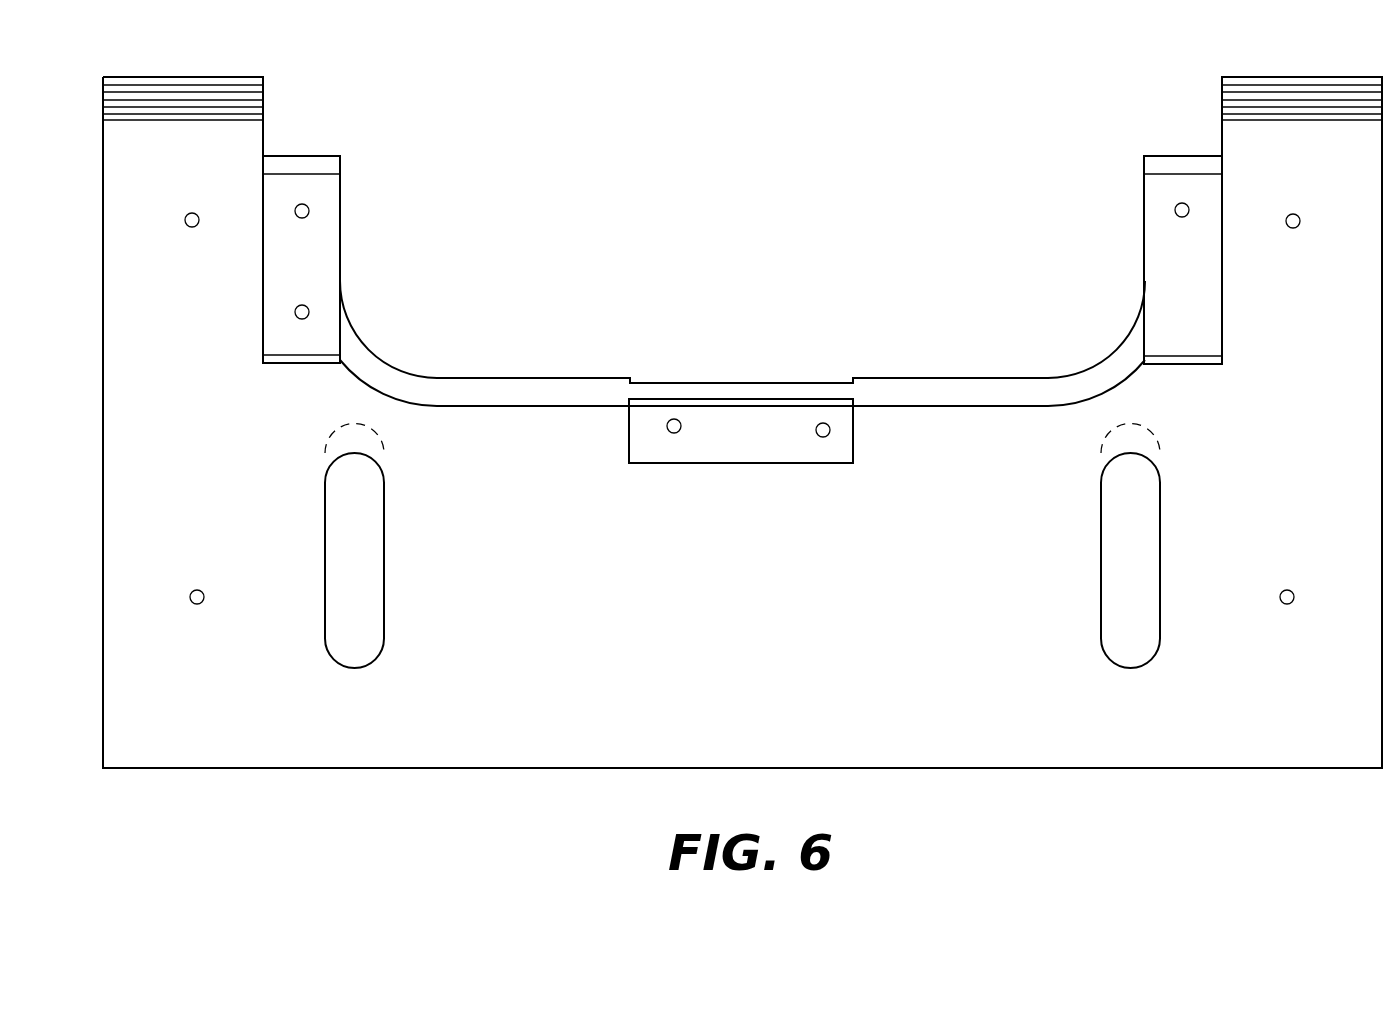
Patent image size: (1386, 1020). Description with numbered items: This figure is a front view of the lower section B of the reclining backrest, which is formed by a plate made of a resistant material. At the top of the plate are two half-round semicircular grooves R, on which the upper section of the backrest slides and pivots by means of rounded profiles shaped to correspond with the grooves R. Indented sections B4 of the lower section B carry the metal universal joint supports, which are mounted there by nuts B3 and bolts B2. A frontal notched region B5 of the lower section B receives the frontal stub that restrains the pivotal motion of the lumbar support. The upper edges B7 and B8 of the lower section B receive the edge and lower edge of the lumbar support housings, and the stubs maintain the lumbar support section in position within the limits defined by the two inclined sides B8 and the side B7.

The lower section B is at (750, 645).
The semicircular grooves R is at (215, 95).
The bolts B2 is at (1183, 260).
The nuts B3 is at (301, 259).
The indented sections B4 is at (303, 270).
The frontal notched region B5 is at (735, 442).
The upper edge B7 is at (517, 387).
The upper edges B8 is at (332, 163).